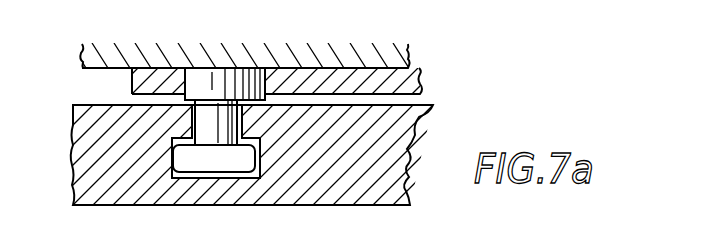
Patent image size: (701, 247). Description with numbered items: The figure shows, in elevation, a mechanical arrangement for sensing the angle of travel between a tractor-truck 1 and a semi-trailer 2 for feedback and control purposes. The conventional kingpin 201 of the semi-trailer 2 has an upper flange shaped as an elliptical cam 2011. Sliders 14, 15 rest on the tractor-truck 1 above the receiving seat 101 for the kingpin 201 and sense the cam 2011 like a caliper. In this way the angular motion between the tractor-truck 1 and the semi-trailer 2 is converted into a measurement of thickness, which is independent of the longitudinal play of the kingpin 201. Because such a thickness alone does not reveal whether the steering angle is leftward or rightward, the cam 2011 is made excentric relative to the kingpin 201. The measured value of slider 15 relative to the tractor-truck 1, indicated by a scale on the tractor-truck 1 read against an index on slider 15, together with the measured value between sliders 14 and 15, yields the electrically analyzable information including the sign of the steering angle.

The tractor-truck 1 is at (393, 148).
The semi-trailer 2 is at (380, 65).
The slider 14 is at (132, 85).
The slider 15 is at (397, 78).
The receiving seat 101 is at (243, 173).
The kingpin 201 is at (212, 163).
The elliptical cam 2011 is at (203, 80).